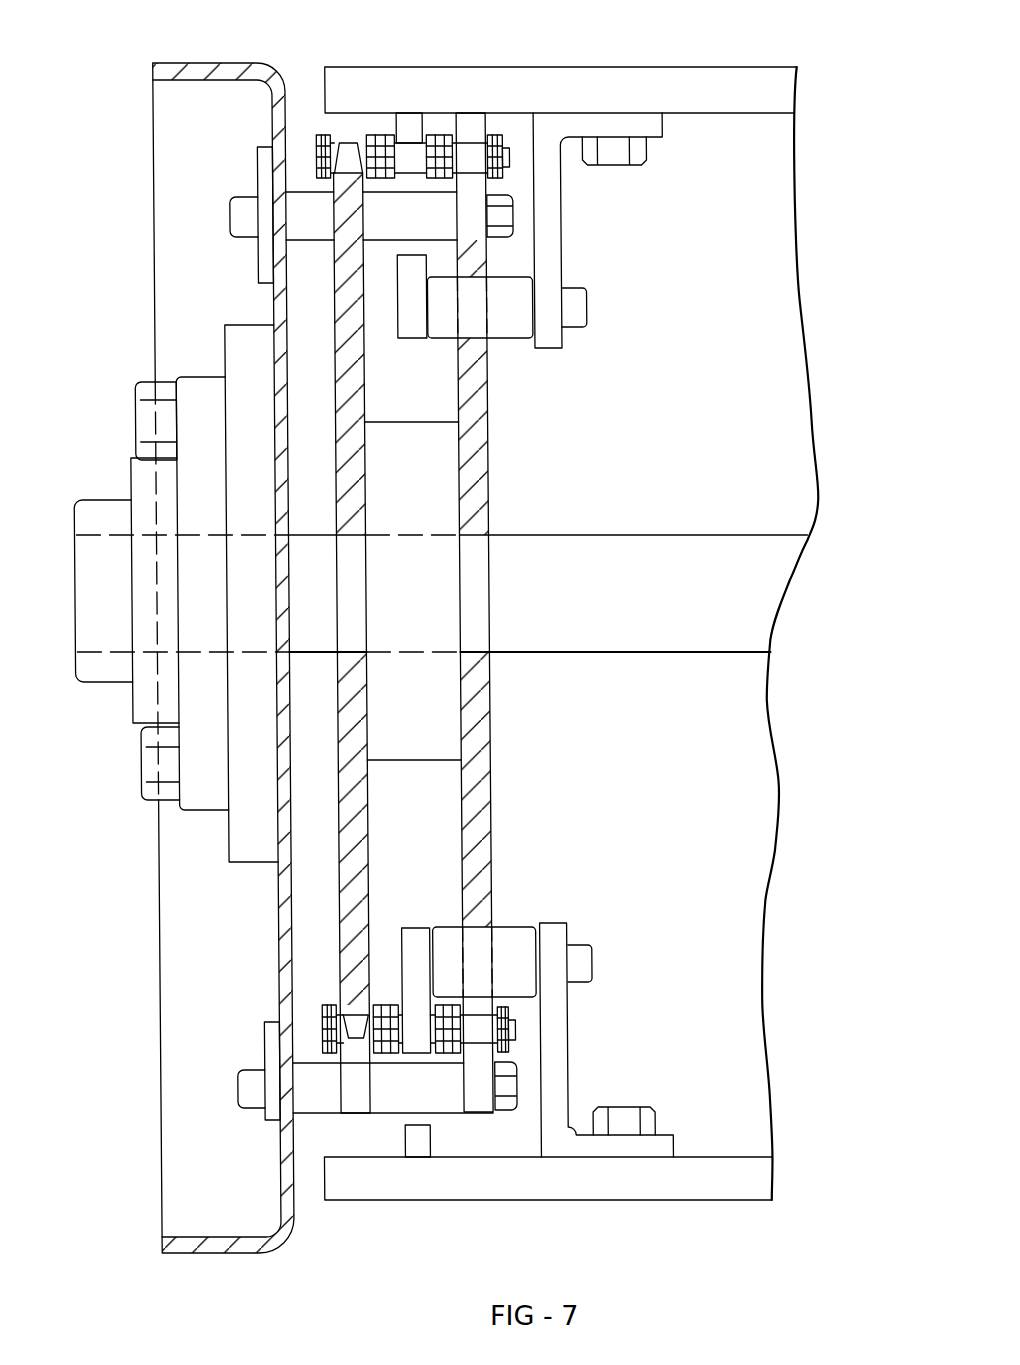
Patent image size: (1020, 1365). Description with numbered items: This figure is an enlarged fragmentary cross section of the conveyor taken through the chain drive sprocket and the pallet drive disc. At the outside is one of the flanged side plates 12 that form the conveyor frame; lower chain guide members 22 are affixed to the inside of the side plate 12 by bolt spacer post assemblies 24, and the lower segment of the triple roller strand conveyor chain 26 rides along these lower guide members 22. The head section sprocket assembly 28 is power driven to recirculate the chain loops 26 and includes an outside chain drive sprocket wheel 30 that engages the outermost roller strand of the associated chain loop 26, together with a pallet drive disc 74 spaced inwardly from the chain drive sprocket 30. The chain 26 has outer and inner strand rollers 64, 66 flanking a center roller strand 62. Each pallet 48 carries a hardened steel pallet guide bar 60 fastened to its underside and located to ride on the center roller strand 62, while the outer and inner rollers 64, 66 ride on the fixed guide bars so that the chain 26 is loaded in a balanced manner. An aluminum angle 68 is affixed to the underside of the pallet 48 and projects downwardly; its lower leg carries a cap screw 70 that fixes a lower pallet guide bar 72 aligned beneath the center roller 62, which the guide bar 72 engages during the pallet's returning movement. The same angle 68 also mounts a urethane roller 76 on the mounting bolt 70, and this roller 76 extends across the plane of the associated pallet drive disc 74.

The flanged side plate 12 is at (155, 986).
The lower chain guide member 22 is at (363, 1118).
The bolt spacer post assembly 24 is at (242, 1108).
The triple roller strand conveyor chain 26 is at (317, 130).
The head section sprocket assembly 28 is at (670, 657).
The chain drive sprocket wheel 30 is at (340, 895).
The pallet 48 is at (695, 38).
The pallet guide bar 60 is at (398, 132).
The center roller strand 62 is at (412, 137).
The outer strand roller 64 is at (350, 138).
The inner strand roller 66 is at (472, 137).
The aluminum angle 68 is at (566, 227).
The cap screw 70 is at (590, 294).
The lower pallet guide bar 72 is at (396, 336).
The pallet drive disc 74 is at (494, 769).
The urethane roller 76 is at (515, 346).